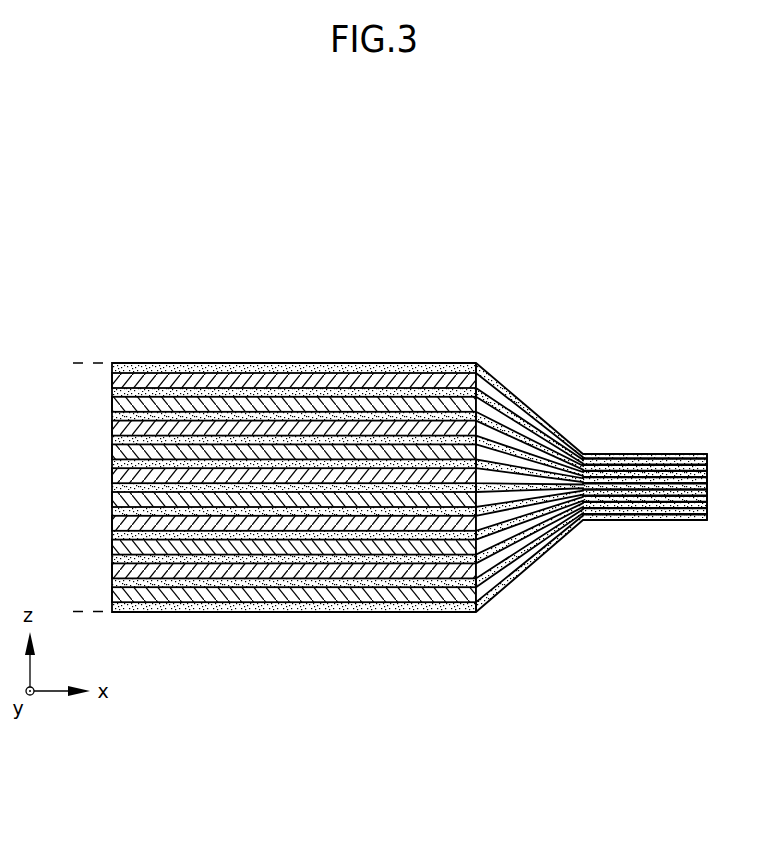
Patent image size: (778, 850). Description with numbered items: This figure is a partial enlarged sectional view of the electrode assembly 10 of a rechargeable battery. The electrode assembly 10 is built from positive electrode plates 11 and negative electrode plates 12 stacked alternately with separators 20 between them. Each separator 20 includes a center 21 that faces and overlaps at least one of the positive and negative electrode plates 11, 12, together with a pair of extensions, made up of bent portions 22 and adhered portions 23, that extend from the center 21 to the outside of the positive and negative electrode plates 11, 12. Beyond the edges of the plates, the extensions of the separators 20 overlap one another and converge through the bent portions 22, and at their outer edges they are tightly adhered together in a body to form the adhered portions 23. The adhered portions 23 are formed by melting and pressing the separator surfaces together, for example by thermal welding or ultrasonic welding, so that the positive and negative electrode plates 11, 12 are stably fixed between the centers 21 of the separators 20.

The electrode assembly 10 is at (409, 479).
The positive electrode plate 11 is at (158, 378).
The negative electrode plate 12 is at (207, 598).
The separator 20 is at (563, 534).
The center 21 is at (433, 605).
The bent portion 22 is at (533, 563).
The adhered portion 23 is at (645, 563).